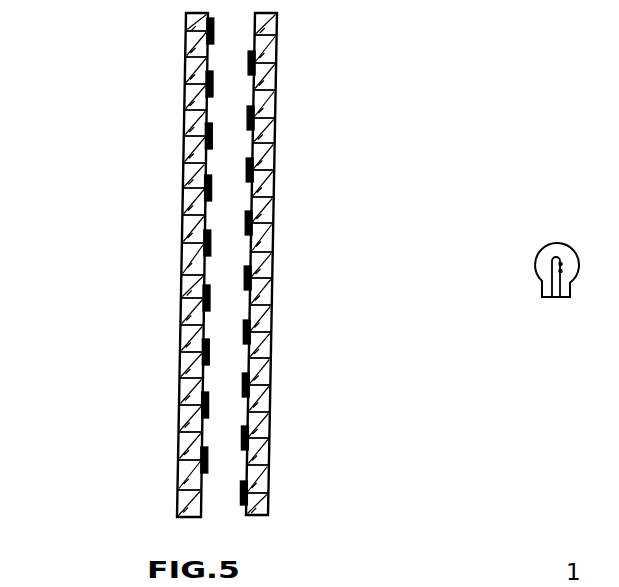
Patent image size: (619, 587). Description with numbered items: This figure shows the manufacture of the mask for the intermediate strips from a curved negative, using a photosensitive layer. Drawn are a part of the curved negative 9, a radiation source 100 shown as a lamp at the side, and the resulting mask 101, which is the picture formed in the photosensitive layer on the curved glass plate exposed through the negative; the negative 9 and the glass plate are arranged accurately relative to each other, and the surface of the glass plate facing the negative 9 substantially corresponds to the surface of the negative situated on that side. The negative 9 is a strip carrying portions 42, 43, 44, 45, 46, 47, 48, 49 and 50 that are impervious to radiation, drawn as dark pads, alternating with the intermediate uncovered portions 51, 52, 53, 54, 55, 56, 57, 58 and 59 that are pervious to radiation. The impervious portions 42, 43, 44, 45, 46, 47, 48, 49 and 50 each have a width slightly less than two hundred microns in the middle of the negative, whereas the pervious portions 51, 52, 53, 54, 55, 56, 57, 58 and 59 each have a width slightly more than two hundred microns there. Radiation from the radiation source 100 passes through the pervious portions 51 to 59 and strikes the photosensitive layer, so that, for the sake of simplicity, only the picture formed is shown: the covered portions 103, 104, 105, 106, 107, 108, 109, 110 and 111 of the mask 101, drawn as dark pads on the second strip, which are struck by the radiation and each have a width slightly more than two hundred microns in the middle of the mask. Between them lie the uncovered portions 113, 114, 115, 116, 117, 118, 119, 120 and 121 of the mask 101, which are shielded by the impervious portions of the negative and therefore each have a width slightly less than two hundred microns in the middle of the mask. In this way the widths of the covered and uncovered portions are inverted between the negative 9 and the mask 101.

The negative for the intermediate strips 9 is at (284, 183).
The radiation source 100 is at (552, 243).
The mask 101 is at (170, 507).
The covered portion of the mask 103 is at (186, 31).
The covered portion of the mask 104 is at (185, 84).
The covered portion of the mask 105 is at (184, 136).
The covered portion of the mask 106 is at (183, 188).
The covered portion of the mask 107 is at (182, 243).
The covered portion of the mask 108 is at (181, 298).
The covered portion of the mask 109 is at (180, 352).
The covered portion of the mask 110 is at (179, 405).
The covered portion of the mask 111 is at (178, 460).
The uncovered portion of the mask 113 is at (185, 57).
The uncovered portion of the mask 114 is at (184, 110).
The uncovered portion of the mask 115 is at (183, 163).
The uncovered portion of the mask 116 is at (182, 215).
The uncovered portion of the mask 117 is at (181, 275).
The uncovered portion of the mask 118 is at (180, 325).
The uncovered portion of the mask 119 is at (180, 378).
The uncovered portion of the mask 120 is at (178, 432).
The uncovered portion of the mask 121 is at (178, 490).
The impervious portion of the negative 42 is at (276, 61).
The impervious portion of the negative 43 is at (275, 116).
The impervious portion of the negative 44 is at (274, 168).
The impervious portion of the negative 45 is at (273, 221).
The impervious portion of the negative 46 is at (272, 276).
The impervious portion of the negative 47 is at (271, 330).
The impervious portion of the negative 48 is at (270, 383).
The impervious portion of the negative 49 is at (269, 436).
The impervious portion of the negative 50 is at (268, 491).
The pervious portion of the negative 51 is at (277, 35).
The pervious portion of the negative 52 is at (276, 90).
The pervious portion of the negative 53 is at (275, 143).
The pervious portion of the negative 54 is at (274, 197).
The pervious portion of the negative 55 is at (273, 252).
The pervious portion of the negative 56 is at (272, 305).
The pervious portion of the negative 57 is at (271, 358).
The pervious portion of the negative 58 is at (270, 412).
The pervious portion of the negative 59 is at (269, 465).